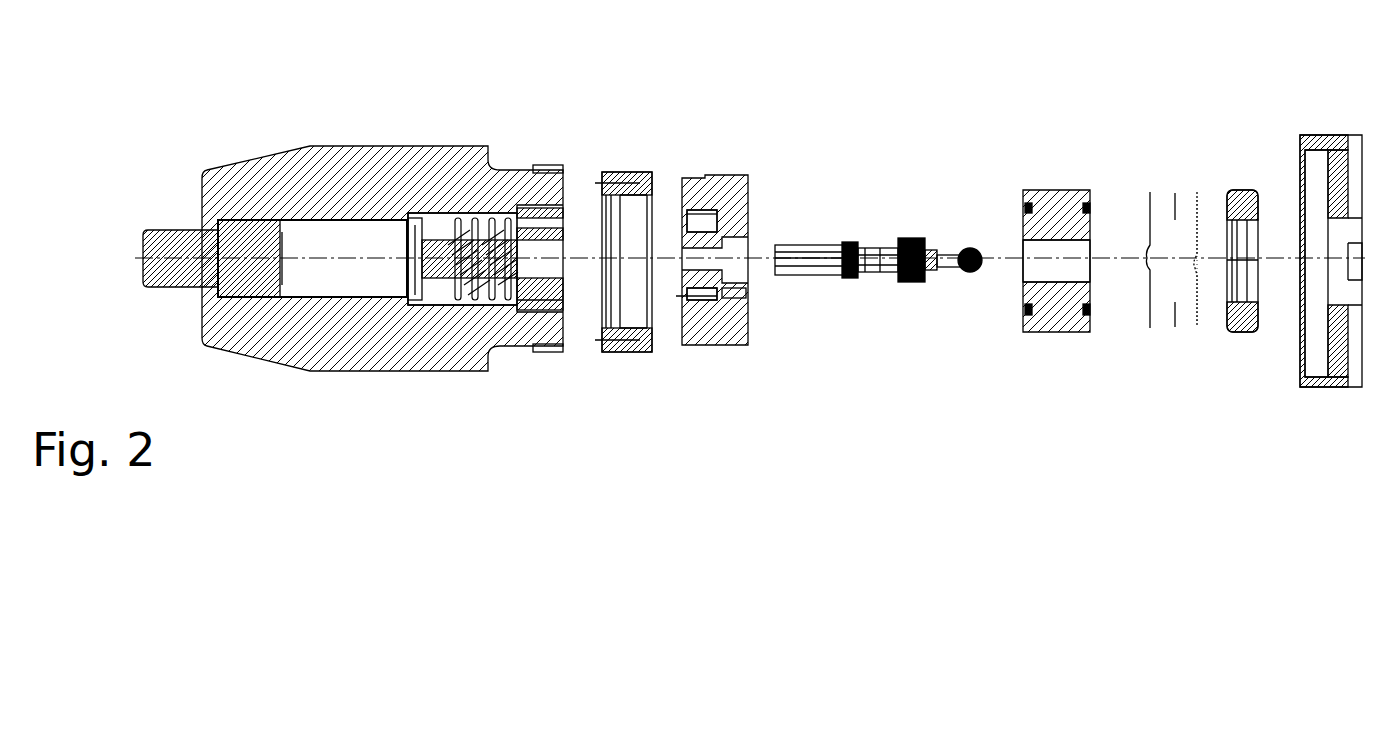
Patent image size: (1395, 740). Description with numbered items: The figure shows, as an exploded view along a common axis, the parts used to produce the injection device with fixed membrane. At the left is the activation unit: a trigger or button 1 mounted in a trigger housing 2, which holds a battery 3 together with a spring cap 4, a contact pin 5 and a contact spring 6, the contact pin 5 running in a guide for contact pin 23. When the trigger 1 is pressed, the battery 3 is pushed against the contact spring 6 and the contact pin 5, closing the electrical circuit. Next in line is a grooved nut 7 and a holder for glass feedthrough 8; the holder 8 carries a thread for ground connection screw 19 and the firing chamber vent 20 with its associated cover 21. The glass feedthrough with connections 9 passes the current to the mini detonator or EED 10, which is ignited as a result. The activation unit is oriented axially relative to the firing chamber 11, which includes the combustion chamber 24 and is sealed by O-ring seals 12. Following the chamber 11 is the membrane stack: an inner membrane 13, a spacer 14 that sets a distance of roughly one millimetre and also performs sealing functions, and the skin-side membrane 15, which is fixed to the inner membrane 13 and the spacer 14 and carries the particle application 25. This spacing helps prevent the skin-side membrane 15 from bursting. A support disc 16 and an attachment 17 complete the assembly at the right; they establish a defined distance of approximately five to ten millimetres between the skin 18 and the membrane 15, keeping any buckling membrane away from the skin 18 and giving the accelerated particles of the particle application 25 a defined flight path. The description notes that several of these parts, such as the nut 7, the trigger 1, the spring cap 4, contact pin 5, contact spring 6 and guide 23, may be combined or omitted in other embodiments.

The trigger 1 is at (175, 230).
The trigger housing 2 is at (268, 150).
The battery 3 is at (303, 285).
The spring cap 4 is at (432, 305).
The contact pin 5 is at (432, 213).
The contact spring 6 is at (470, 218).
The grooved nut 7 is at (630, 172).
The holder for glass feedthrough 8 is at (730, 178).
The glass feedthrough with connections 9 is at (910, 238).
The mini detonator 10 is at (973, 272).
The firing chamber 11 is at (1057, 190).
The O-ring seal 12 is at (1067, 335).
The inner membrane 13 is at (1150, 197).
The spacer 14 is at (1175, 330).
The skin-side membrane 15 is at (1198, 325).
The support disc 16 is at (1247, 190).
The attachment 17 is at (1333, 137).
The skin 18 is at (1394, 277).
The thread for ground connection screw 19 is at (688, 178).
The firing chamber vent 20 is at (747, 303).
The cover 21 is at (677, 303).
The guide for contact pin 23 is at (543, 317).
The combustion chamber 24 is at (1037, 260).
The particle application 25 is at (1200, 197).